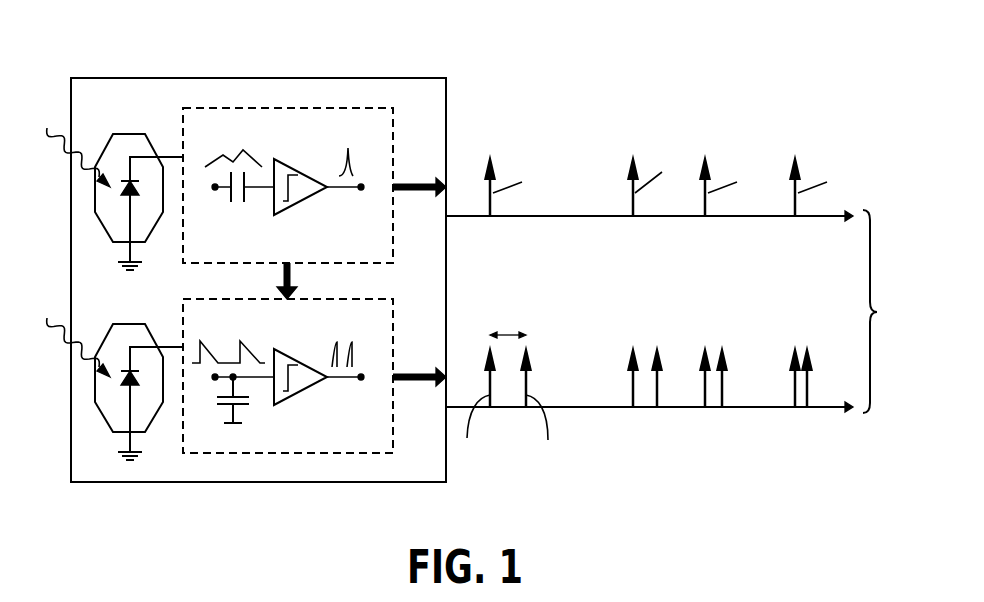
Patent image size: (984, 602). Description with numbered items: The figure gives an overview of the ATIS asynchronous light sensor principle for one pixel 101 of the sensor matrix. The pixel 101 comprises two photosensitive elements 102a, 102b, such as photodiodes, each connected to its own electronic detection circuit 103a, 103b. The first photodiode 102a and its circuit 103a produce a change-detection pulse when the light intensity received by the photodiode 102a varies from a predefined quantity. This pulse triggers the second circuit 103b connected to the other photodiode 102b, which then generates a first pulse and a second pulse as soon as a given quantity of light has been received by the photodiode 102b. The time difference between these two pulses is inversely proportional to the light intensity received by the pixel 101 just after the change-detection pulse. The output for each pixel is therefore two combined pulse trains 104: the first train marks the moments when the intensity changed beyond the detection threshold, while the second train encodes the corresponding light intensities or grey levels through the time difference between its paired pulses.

The pixel 101 is at (116, 483).
The photosensitive element 102a is at (112, 158).
The photosensitive element 102b is at (110, 404).
The electronic detection circuit 103a is at (228, 107).
The electronic detection circuit 103b is at (228, 454).
The combined pulse trains 104 is at (684, 310).